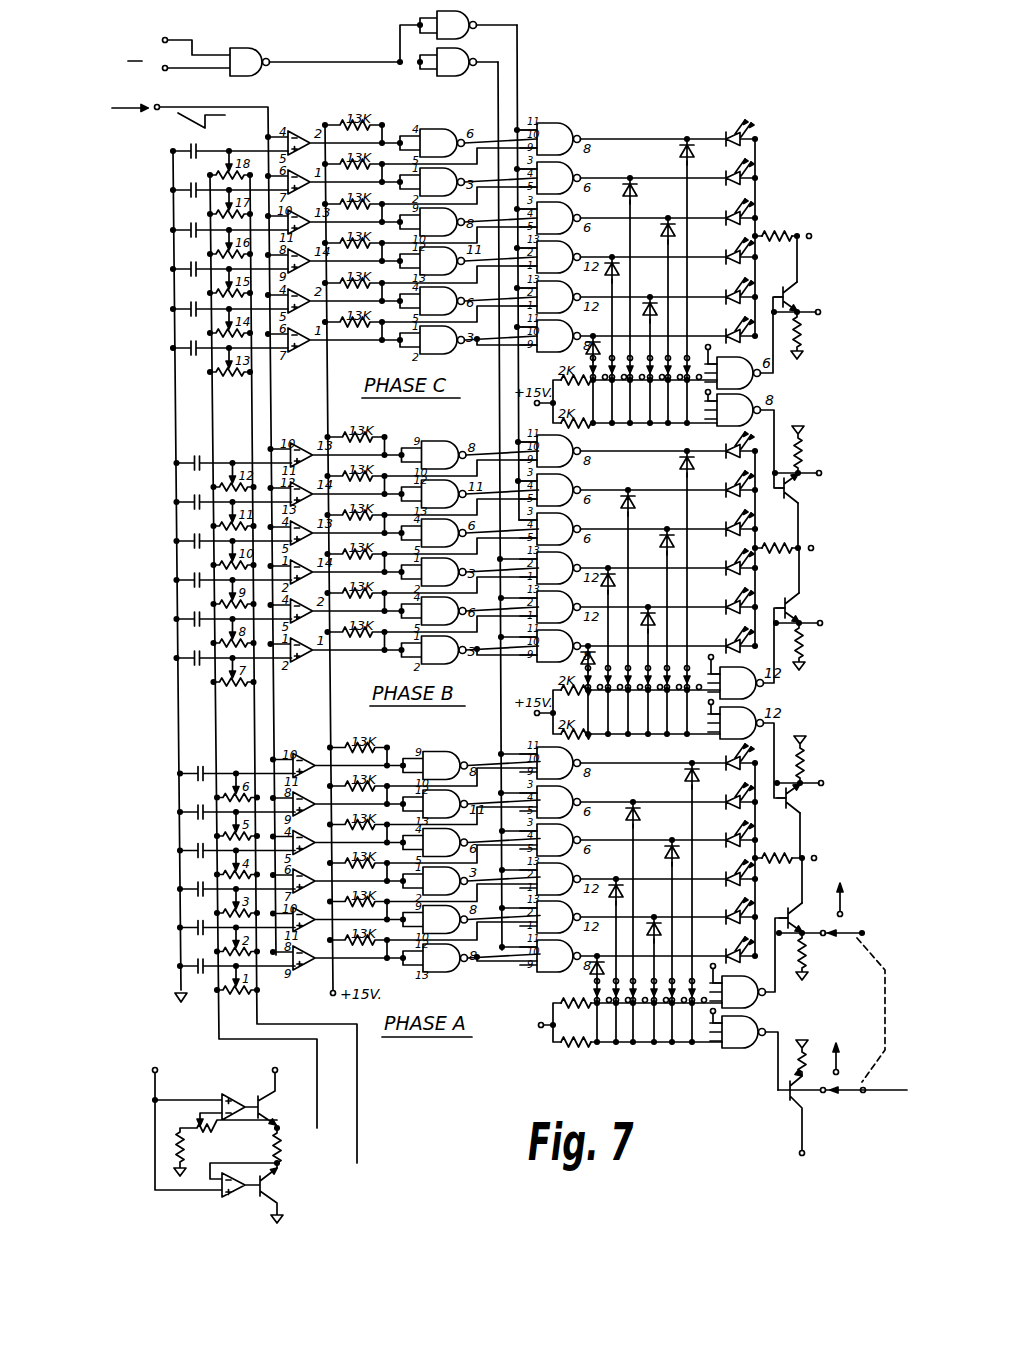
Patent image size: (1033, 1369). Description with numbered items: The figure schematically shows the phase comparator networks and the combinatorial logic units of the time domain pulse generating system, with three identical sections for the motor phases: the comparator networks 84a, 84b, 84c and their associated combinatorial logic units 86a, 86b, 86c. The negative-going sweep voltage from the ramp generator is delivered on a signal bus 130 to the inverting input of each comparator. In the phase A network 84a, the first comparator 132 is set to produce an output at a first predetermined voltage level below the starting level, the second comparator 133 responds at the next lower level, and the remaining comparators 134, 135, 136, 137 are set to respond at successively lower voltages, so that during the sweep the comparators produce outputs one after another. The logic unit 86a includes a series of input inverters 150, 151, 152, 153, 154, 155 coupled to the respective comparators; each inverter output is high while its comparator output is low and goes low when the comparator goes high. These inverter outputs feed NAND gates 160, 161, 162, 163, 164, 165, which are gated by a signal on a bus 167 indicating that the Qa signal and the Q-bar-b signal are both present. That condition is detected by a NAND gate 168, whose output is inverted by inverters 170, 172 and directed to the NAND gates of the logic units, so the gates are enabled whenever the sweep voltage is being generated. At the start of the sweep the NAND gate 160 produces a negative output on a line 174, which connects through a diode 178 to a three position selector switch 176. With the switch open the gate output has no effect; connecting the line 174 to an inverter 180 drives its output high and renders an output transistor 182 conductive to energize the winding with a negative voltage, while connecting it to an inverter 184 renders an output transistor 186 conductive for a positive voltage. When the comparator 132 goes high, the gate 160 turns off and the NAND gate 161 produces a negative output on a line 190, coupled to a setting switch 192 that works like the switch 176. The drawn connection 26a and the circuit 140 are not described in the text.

The NAND gate 168 is at (252, 48).
The inverter 170 is at (470, 12).
The inverter 172 is at (467, 48).
The bus 167 is at (498, 100).
The signal bus 130 is at (270, 118).
The comparator network 84c is at (171, 292).
The comparator network 84b is at (174, 596).
The comparator network 84a is at (178, 833).
The combinatorial logic unit 86c is at (578, 118).
The combinatorial logic unit 86b is at (808, 524).
The combinatorial logic unit 86a is at (555, 1042).
The comparator 137 is at (319, 752).
The comparator 136 is at (314, 806).
The comparator 135 is at (314, 845).
The comparator 134 is at (314, 884).
The second comparator 133 is at (314, 924).
The first comparator 132 is at (314, 967).
The input inverter 155 is at (463, 759).
The input inverter 154 is at (462, 800).
The input inverter 153 is at (463, 839).
The input inverter 152 is at (463, 878).
The input inverter 151 is at (463, 916).
The input inverter 150 is at (463, 963).
The NAND gate 165 is at (581, 761).
The NAND gate 164 is at (581, 800).
The NAND gate 163 is at (581, 838).
The NAND gate 162 is at (581, 877).
The NAND gate 161 is at (579, 916).
The NAND gate 160 is at (582, 954).
The line 174 is at (654, 915).
The three position selector switch 176 is at (593, 967).
The diode 178 is at (585, 1045).
The inverter 184 is at (715, 1008).
The inverter 180 is at (763, 1046).
The output transistor 186 is at (795, 901).
The output transistor 182 is at (790, 1118).
The line 190 is at (724, 911).
The setting switch 192 is at (724, 953).
The line to pulse width modulator 26a is at (885, 988).
The sweep generator circuit 140 is at (323, 1184).